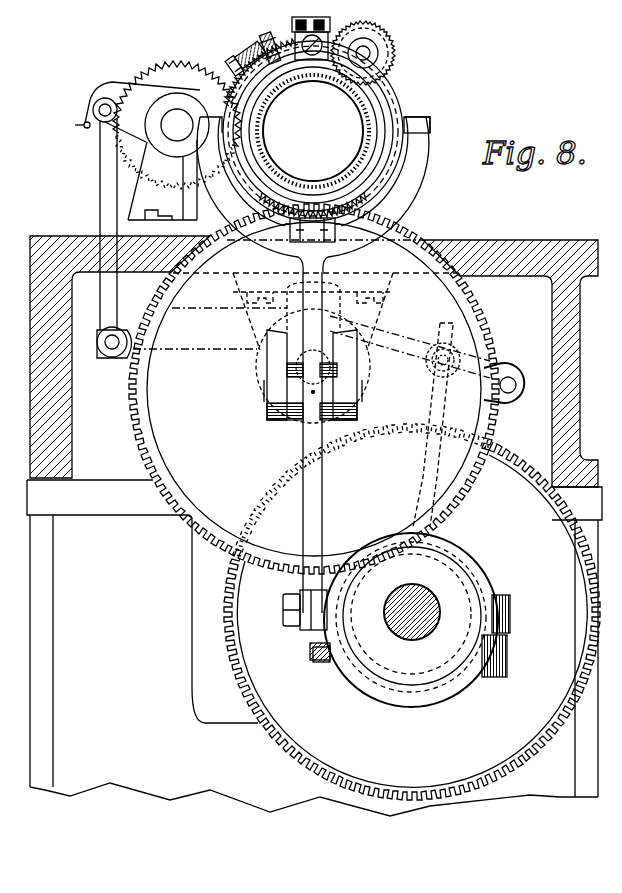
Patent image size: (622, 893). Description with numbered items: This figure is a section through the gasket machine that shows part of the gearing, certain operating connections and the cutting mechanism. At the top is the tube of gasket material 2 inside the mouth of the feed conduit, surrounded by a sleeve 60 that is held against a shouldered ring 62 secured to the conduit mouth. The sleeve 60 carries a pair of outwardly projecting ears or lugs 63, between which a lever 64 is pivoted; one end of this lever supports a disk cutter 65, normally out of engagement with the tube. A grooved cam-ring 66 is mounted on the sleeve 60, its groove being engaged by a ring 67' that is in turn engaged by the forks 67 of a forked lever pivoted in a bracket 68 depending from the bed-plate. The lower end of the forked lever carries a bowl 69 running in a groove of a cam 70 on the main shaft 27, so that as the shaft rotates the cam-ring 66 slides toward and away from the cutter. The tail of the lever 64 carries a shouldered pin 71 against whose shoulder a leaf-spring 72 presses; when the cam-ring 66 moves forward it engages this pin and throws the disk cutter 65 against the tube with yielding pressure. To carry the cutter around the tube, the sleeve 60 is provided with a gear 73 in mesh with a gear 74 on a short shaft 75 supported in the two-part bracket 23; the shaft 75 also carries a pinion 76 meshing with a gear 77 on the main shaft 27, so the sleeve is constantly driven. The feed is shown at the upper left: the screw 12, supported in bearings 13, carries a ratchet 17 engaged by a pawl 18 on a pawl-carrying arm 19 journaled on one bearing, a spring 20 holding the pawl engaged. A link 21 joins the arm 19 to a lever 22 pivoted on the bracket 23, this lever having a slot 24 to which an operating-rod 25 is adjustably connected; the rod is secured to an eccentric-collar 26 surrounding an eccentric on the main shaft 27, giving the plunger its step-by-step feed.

The tube of gasket material 2 is at (277, 93).
The screw 12 is at (177, 125).
The bearings 13 is at (162, 180).
The ratchet 17 is at (160, 68).
The pawl 18 is at (115, 87).
The pawl-carrying arm 19 is at (117, 110).
The spring 20 is at (93, 135).
The link 21 is at (100, 197).
The lever 22 is at (115, 323).
The two-part bracket 23 is at (390, 308).
The slot 24 is at (503, 377).
The operating-rod 25 is at (432, 402).
The eccentric-collar 26 is at (442, 700).
The main shaft 27 is at (430, 590).
The sleeve 60 is at (392, 140).
The ring 62 is at (368, 100).
The ears or lugs 63 is at (332, 32).
The lever 64 is at (272, 33).
The disk cutter 65 is at (396, 50).
The grooved cam-ring 66 is at (382, 117).
The forks 67 is at (327, 194).
The ring 67' is at (432, 134).
The bracket 68 is at (267, 367).
The bowl 69 is at (317, 636).
The cam 70 is at (412, 623).
The shouldered pin 71 is at (243, 70).
The leaf-spring 72 is at (251, 47).
The gear 73 is at (371, 206).
The gear 74 is at (128, 420).
The short shaft 75 is at (300, 417).
The pinion 76 is at (357, 422).
The gear 77 is at (230, 665).